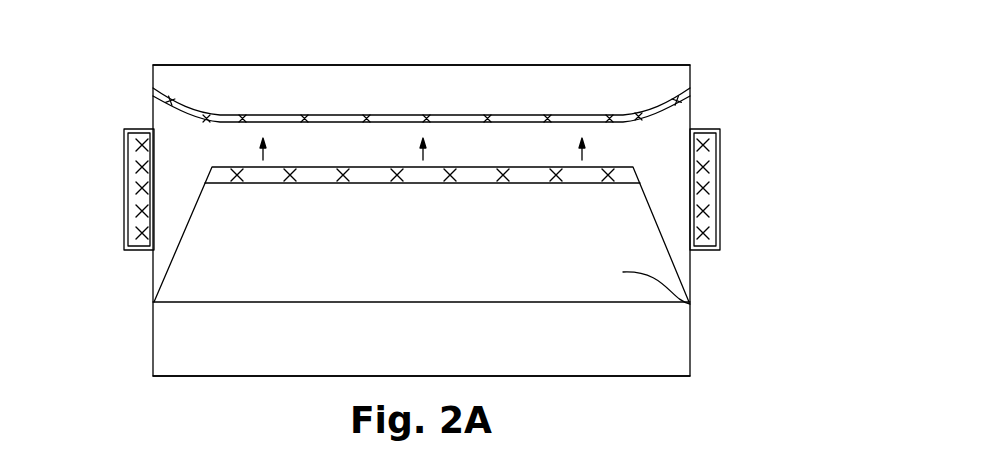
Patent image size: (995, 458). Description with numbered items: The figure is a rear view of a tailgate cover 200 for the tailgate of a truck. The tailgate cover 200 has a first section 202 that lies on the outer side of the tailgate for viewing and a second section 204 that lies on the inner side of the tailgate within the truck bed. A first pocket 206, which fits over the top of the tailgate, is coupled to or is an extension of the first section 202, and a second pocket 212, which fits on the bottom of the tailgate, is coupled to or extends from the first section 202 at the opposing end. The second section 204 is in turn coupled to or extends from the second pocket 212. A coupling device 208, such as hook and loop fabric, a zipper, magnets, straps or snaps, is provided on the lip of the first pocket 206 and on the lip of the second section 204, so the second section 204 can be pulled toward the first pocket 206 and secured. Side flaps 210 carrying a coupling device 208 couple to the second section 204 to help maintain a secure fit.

The tailgate cover 200 is at (733, 33).
The first section 202 is at (162, 260).
The second section 204 is at (692, 306).
The first pocket 206 is at (222, 77).
The coupling device 208 is at (533, 117).
The side flaps 210 is at (138, 128).
The second pocket 212 is at (619, 357).